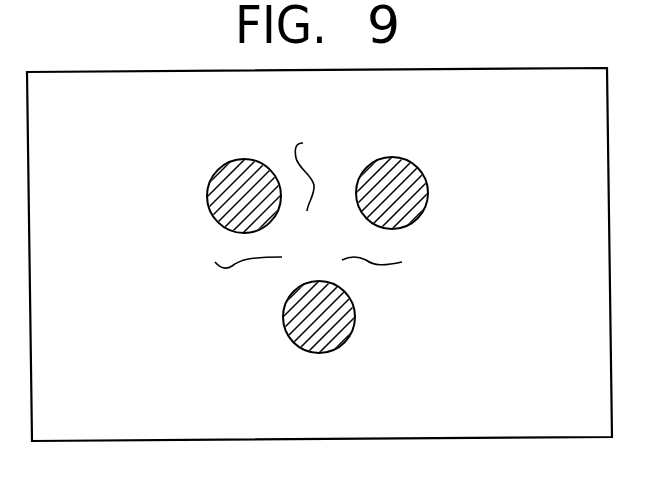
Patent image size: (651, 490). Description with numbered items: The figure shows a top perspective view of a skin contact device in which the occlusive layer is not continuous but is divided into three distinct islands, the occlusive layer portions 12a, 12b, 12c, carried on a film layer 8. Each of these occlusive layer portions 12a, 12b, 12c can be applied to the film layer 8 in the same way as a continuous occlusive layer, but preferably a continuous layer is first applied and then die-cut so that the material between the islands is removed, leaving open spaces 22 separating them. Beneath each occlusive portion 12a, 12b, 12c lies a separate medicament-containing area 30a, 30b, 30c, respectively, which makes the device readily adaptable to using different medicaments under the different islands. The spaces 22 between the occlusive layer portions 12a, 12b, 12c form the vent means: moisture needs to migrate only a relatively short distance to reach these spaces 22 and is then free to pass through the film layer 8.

The film layer 8 is at (543, 92).
The occlusive layer portion 12a is at (229, 182).
The occlusive layer portion 12b is at (394, 188).
The occlusive layer portion 12c is at (302, 319).
The open spaces 22 is at (310, 204).
The medicament-containing area 30a is at (236, 202).
The medicament-containing area 30b is at (405, 207).
The medicament-containing area 30c is at (300, 324).